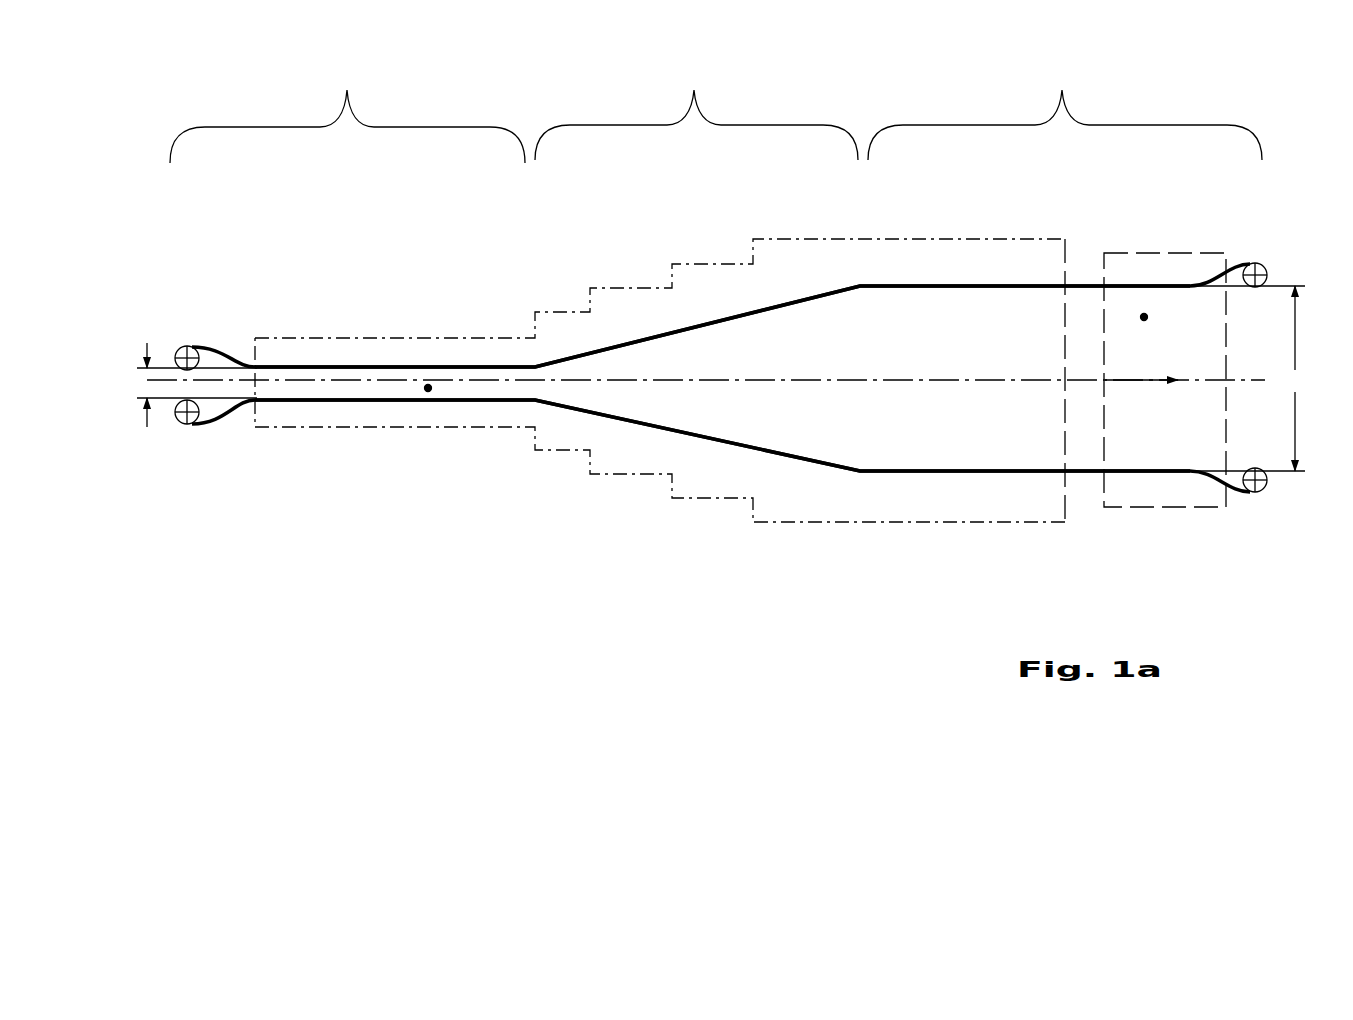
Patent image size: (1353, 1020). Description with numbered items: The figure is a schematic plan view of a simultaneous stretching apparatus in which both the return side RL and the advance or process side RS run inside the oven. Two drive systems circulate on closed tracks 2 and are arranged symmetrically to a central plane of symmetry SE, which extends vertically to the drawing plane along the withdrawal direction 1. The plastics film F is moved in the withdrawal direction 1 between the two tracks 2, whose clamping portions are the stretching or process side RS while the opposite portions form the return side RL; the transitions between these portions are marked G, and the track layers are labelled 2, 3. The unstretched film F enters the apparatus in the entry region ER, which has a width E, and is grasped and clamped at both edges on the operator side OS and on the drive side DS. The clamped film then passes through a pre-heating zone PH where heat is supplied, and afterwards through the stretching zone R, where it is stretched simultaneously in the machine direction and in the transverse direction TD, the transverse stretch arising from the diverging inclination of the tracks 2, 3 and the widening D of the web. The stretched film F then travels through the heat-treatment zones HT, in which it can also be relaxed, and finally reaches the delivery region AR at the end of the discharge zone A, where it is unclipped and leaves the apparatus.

The withdrawal direction 1 is at (1141, 365).
The closed tracks 2 is at (943, 284).
The strip surface layer 3 is at (704, 323).
The entry region ER is at (187, 344).
The delivery region AR is at (1255, 261).
The return side RL is at (390, 364).
The boundary / transition G is at (525, 364).
The plastics film F is at (1144, 317).
The transverse direction TD is at (783, 313).
The process side RS is at (923, 292).
The central plane of symmetry SE is at (998, 377).
The thickness reduction D is at (605, 476).
The width of entry zone E is at (145, 385).
The discharge zone A is at (1296, 378).
The pre-heating zone PH is at (347, 109).
The stretching zone R is at (696, 106).
The heat-treatment zones HT is at (1065, 281).
The operator side OS is at (110, 178).
The drive side DS is at (110, 603).